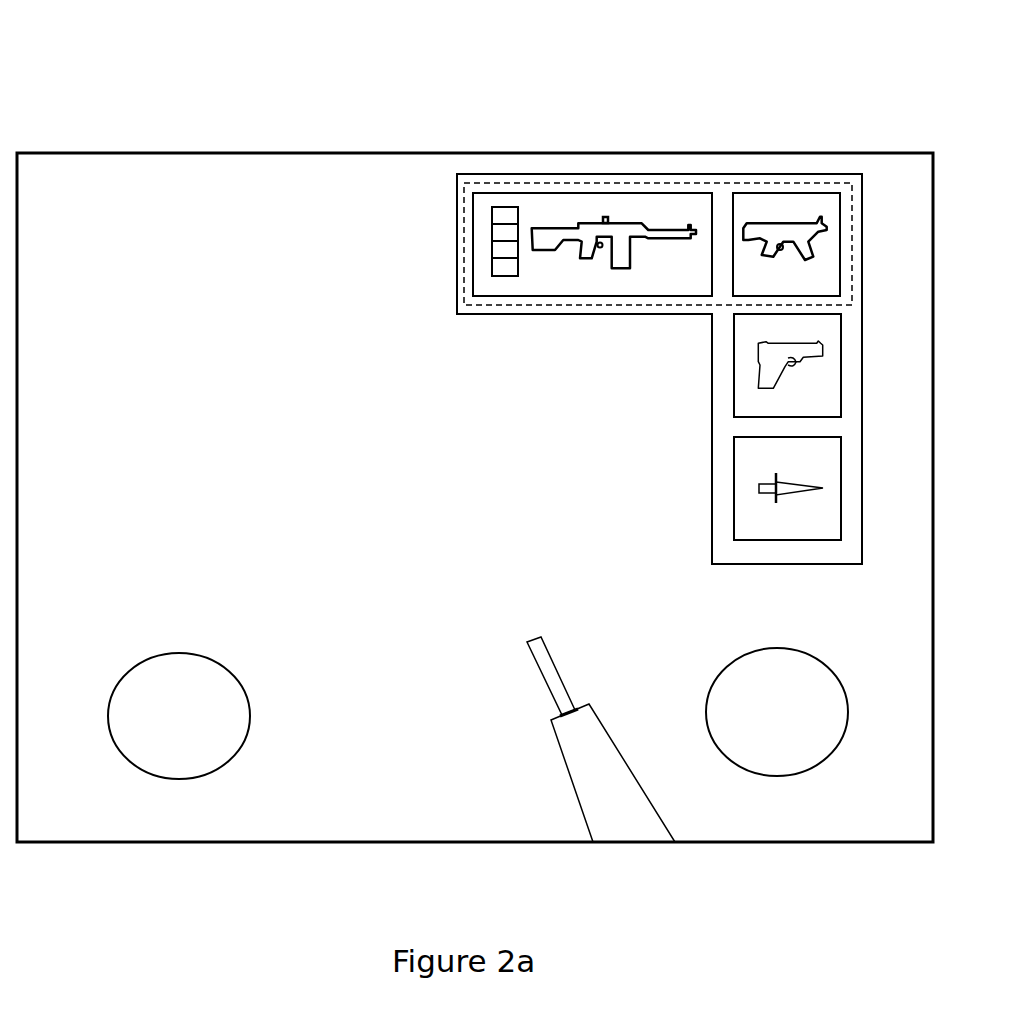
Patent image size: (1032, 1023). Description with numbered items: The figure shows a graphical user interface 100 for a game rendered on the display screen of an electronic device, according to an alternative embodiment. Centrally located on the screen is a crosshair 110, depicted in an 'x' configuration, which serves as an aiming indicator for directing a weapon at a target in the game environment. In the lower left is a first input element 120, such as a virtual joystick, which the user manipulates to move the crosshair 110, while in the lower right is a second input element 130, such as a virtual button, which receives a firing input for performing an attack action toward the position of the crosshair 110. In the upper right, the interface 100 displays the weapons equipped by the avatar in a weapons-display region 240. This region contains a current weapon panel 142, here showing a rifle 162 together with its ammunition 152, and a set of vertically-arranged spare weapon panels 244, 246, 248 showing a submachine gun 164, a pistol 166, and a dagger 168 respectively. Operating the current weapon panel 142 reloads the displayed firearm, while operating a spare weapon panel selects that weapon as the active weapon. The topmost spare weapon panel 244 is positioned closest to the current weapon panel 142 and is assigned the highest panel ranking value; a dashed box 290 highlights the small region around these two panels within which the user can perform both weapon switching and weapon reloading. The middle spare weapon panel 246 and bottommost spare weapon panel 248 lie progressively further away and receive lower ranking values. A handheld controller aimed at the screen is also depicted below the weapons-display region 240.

The graphical user interface 100 is at (195, 128).
The crosshair 110 is at (427, 523).
The first input element 120 is at (202, 730).
The second input element 130 is at (798, 727).
The current weapon panel 142 is at (492, 295).
The ammunition 152 is at (508, 207).
The rifle 162 is at (627, 213).
The submachine gun 164 is at (797, 213).
The pistol 166 is at (758, 367).
The dagger 168 is at (760, 483).
The weapons-display region 240 is at (453, 248).
The spare weapon panel 244 is at (842, 242).
The spare weapon panel 246 is at (841, 367).
The spare weapon panel 248 is at (841, 487).
The dashed box 290 is at (583, 303).